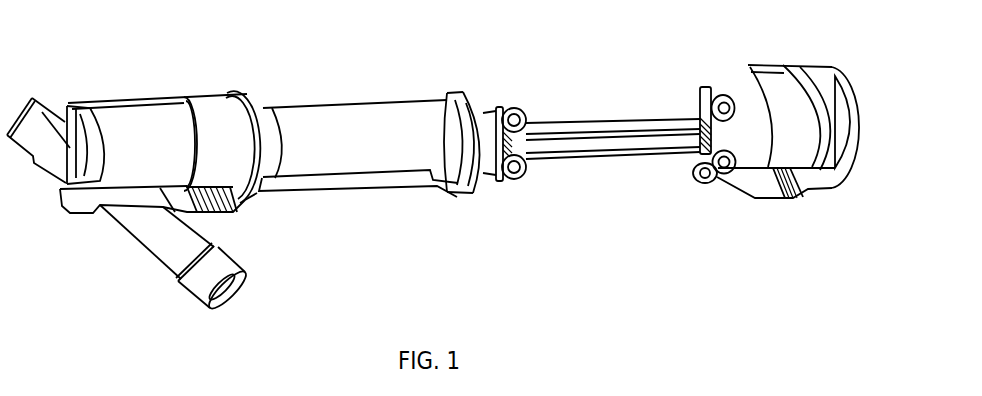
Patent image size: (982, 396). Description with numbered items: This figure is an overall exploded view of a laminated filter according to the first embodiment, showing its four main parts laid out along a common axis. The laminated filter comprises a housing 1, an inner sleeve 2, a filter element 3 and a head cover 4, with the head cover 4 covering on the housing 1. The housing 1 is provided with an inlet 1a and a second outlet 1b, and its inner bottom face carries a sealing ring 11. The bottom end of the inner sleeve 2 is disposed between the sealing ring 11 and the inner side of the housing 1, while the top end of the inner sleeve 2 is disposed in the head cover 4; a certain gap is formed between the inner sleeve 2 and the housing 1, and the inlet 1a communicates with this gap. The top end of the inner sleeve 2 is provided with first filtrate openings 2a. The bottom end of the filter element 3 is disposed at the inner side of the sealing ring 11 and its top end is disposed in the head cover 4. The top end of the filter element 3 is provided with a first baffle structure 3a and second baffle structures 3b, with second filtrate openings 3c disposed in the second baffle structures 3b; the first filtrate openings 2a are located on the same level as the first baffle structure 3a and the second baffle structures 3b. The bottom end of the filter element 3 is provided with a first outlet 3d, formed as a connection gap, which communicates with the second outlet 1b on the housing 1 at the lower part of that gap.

The housing 1 is at (147, 118).
The sealing ring 11 is at (104, 132).
The inlet 1a is at (247, 280).
The second outlet 1b is at (40, 108).
The inner sleeve 2 is at (363, 117).
The first filtrate openings 2a is at (479, 108).
The filter element 3 is at (595, 130).
The first baffle structure 3a is at (705, 107).
The second baffle structures 3b is at (722, 93).
The second filtrate openings 3c is at (705, 183).
The first outlet 3d is at (511, 181).
The head cover 4 is at (783, 85).